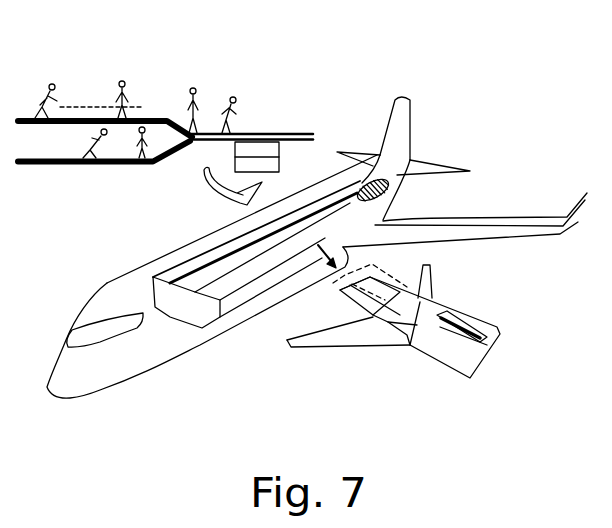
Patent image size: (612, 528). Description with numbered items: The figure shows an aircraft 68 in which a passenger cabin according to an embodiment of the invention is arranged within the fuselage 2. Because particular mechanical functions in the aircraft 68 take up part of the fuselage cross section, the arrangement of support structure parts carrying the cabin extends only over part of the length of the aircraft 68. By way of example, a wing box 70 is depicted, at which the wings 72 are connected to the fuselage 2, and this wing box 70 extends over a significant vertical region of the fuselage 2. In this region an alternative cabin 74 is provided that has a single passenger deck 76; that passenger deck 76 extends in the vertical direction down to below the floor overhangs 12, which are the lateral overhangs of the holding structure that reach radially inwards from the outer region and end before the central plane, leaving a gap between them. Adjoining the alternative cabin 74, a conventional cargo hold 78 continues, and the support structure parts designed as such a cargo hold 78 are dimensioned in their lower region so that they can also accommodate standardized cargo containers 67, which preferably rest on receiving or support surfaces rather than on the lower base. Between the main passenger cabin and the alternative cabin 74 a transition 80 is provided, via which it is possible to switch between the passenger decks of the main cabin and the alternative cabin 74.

The fuselage 2 is at (165, 348).
The floor overhang 12 is at (480, 317).
The cargo container 67 is at (278, 144).
The aircraft 68 is at (105, 265).
The wing box 70 is at (383, 216).
The wing 72 is at (493, 217).
The alternative cabin 74 is at (320, 193).
The single passenger deck 76 is at (250, 134).
The cargo hold 78 is at (212, 133).
The transition 80 is at (180, 108).